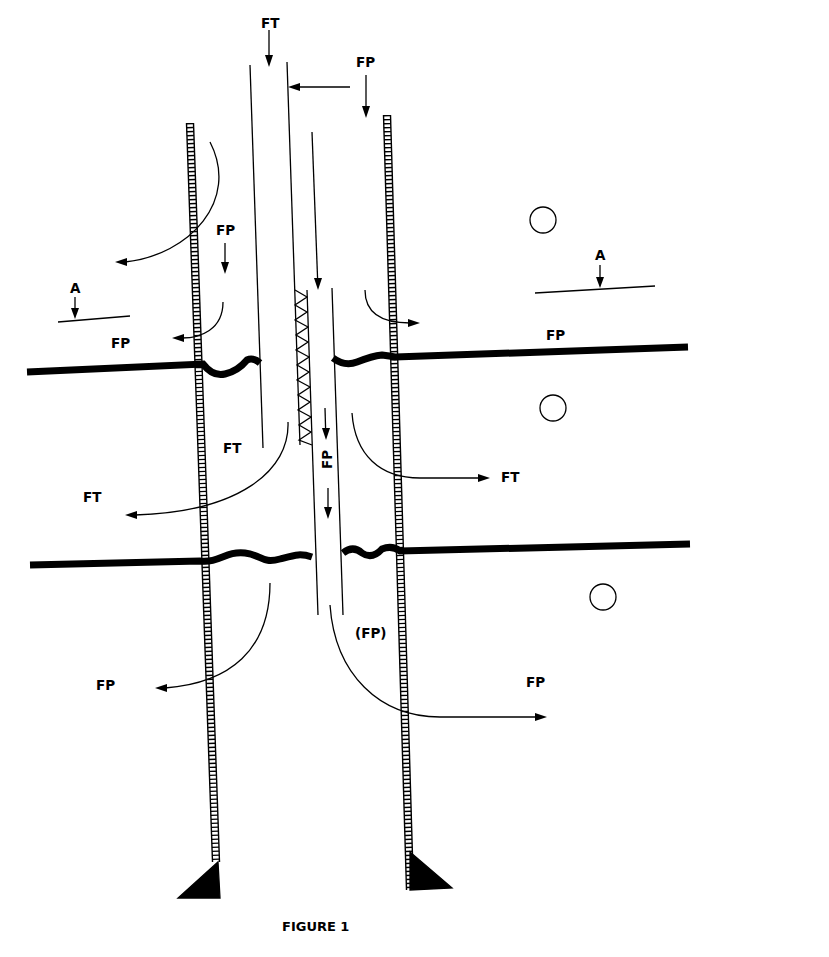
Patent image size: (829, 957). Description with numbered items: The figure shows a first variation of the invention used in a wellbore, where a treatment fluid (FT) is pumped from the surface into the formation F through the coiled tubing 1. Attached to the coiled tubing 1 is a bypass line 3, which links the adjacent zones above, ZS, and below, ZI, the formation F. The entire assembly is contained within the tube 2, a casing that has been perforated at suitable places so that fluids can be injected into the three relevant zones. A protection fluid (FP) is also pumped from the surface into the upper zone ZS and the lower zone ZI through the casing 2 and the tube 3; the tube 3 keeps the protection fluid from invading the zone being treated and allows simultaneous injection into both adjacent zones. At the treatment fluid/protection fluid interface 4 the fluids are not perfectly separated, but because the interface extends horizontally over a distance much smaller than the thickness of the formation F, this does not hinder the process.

The coiled tubing 1 is at (252, 100).
The tube 2 is at (393, 158).
The bypass line 3 is at (333, 322).
The treatment fluid/protection fluid interface 4 is at (388, 355).
The adjacent zone above ZS is at (513, 222).
The formation F is at (553, 408).
The adjacent zone below ZI is at (603, 597).